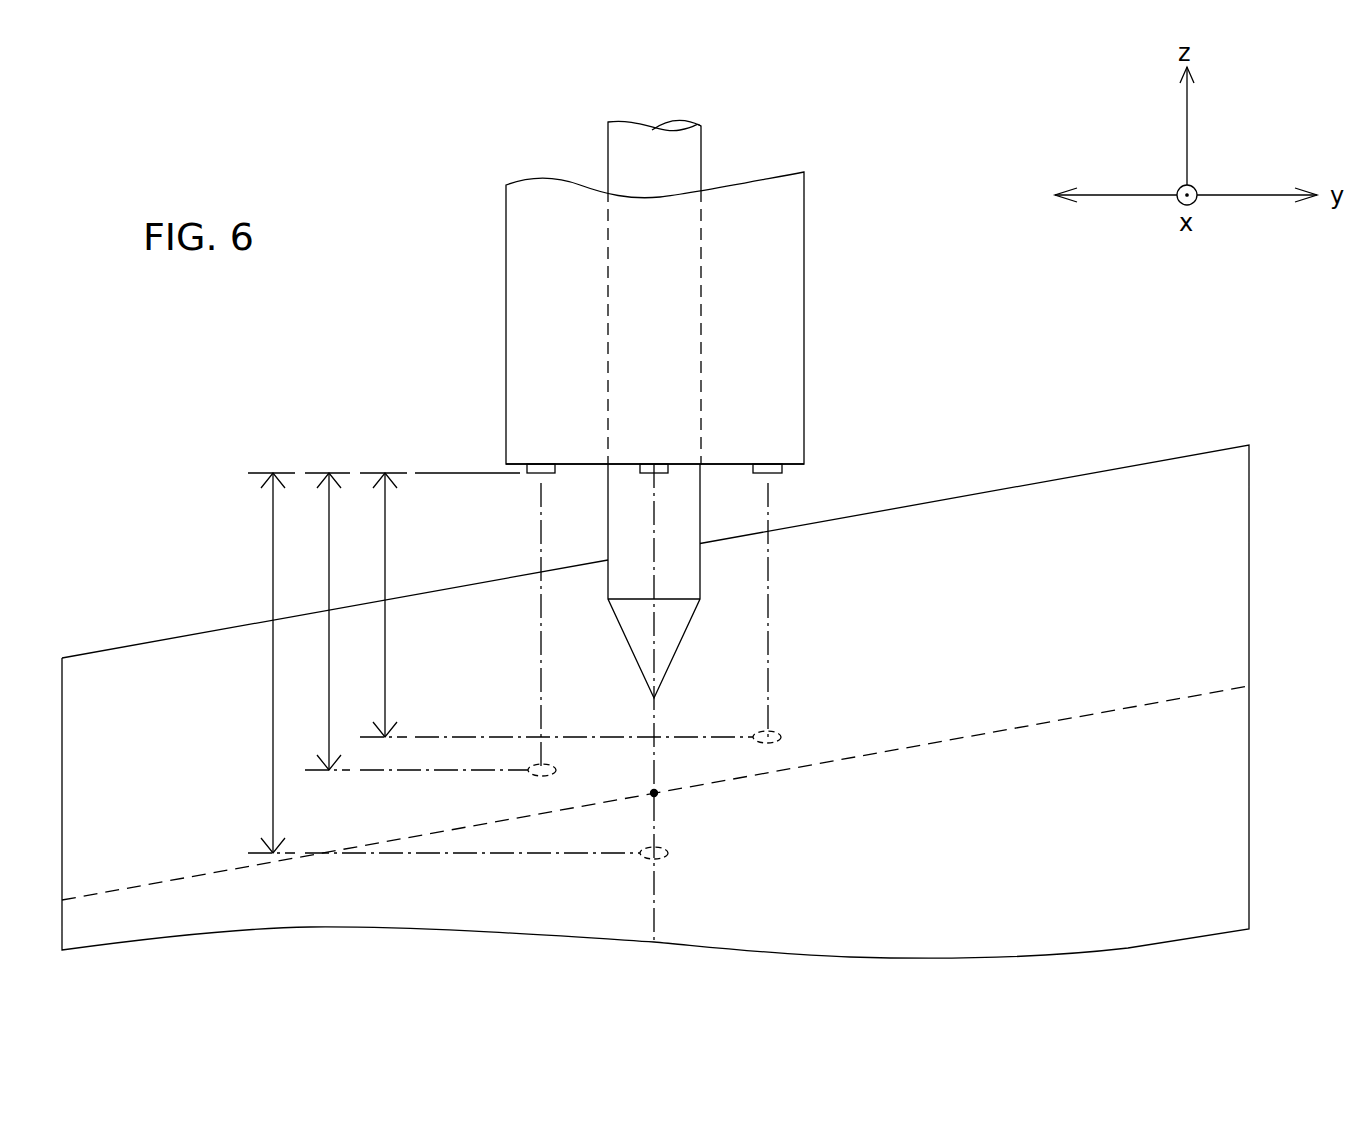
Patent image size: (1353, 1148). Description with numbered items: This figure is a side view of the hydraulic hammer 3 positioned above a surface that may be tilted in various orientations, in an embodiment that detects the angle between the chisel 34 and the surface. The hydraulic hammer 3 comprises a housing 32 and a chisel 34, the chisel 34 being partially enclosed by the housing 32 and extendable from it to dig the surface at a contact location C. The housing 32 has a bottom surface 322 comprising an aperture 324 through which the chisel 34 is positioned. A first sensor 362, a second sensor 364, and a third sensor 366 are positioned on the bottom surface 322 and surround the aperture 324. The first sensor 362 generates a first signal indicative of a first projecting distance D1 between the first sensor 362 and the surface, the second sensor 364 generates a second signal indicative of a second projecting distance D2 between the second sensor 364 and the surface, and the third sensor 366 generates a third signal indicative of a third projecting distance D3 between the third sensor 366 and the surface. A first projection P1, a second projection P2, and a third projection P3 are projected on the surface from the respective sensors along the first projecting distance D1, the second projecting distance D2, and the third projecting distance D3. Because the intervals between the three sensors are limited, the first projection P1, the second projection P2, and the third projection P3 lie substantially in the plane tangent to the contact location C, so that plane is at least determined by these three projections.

The hydraulic hammer 3 is at (734, 409).
The housing 32 is at (768, 310).
The chisel 34 is at (670, 176).
The bottom surface 322 is at (570, 464).
The aperture 324 is at (653, 460).
The first sensor 362 is at (530, 473).
The second sensor 364 is at (775, 473).
The third sensor 366 is at (662, 473).
The first projecting distance D1 is at (329, 685).
The second projecting distance D2 is at (385, 673).
The third projecting distance D3 is at (273, 703).
The first projection P1 is at (550, 777).
The second projection P2 is at (773, 747).
The third projection P3 is at (660, 857).
The contact location C is at (657, 793).